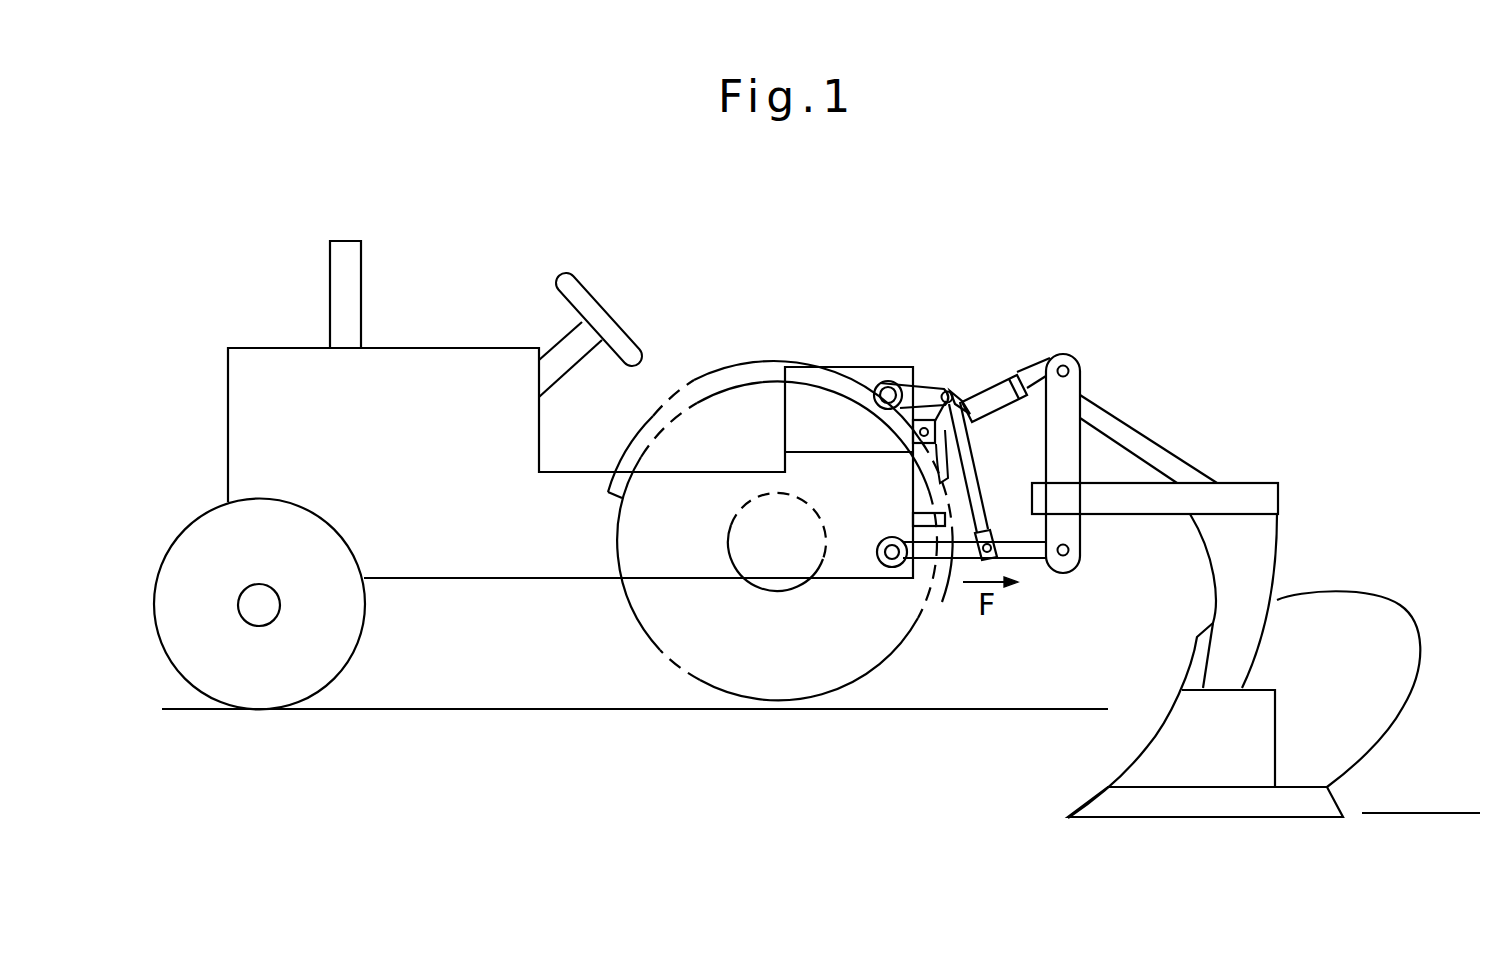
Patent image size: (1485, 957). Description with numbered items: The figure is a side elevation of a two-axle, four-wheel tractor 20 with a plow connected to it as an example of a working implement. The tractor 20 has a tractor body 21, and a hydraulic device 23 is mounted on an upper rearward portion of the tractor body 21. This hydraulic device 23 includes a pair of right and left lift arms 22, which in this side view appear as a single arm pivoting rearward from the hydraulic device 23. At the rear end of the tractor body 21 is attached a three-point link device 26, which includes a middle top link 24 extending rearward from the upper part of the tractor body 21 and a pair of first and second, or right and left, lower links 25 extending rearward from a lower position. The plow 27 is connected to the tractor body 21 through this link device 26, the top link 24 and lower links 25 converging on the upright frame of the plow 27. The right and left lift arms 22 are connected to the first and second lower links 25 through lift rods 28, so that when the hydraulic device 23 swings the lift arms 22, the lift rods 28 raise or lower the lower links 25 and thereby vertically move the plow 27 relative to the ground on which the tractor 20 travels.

The tractor 20 is at (547, 582).
The tractor body 21 is at (692, 560).
The lift arms 22 is at (923, 390).
The hydraulic device 23 is at (858, 367).
The top link 24 is at (1003, 395).
The lower links 25 is at (953, 562).
The three-point link device 26 is at (1034, 567).
The plow 27 is at (1163, 798).
The lift rods 28 is at (975, 462).